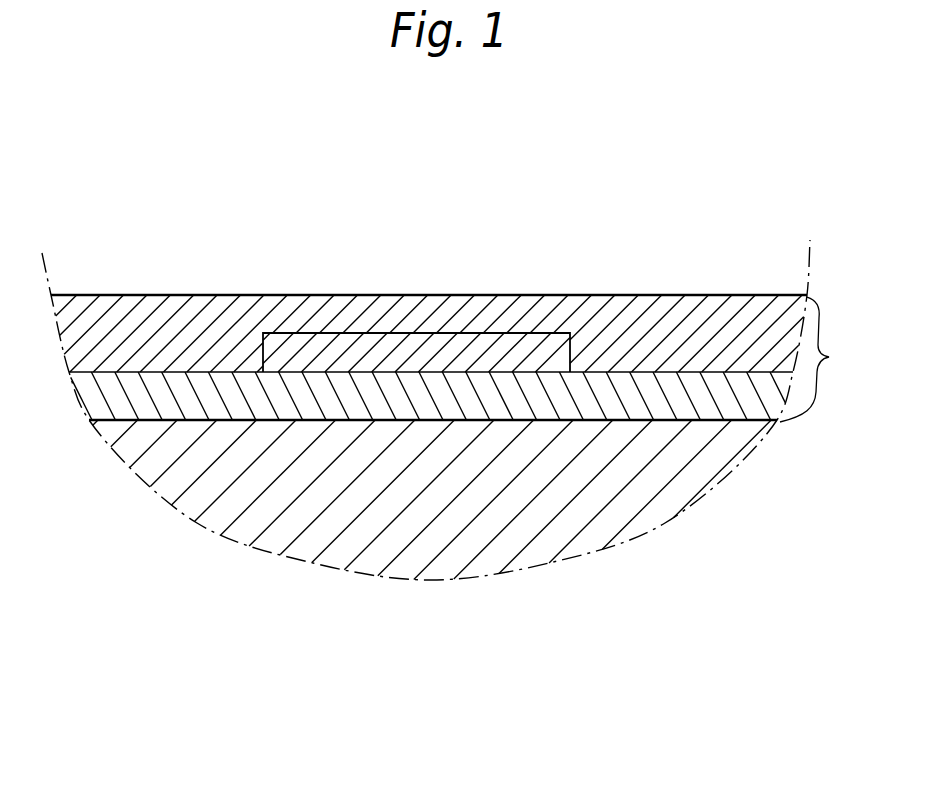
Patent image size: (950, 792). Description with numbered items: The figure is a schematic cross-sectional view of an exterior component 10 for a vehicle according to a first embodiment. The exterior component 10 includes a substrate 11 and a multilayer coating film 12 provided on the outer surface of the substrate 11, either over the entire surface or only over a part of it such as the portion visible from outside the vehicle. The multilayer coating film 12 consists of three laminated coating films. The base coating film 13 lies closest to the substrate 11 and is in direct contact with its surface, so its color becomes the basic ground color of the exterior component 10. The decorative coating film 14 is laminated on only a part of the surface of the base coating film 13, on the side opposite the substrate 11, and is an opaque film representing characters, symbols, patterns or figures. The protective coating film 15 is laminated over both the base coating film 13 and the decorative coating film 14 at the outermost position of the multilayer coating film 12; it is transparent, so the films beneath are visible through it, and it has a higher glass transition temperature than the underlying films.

The exterior component 10 is at (768, 200).
The substrate 11 is at (575, 500).
The multilayer coating film 12 is at (819, 359).
The base coating film 13 is at (225, 397).
The decorative coating film 14 is at (475, 348).
The protective coating film 15 is at (380, 312).